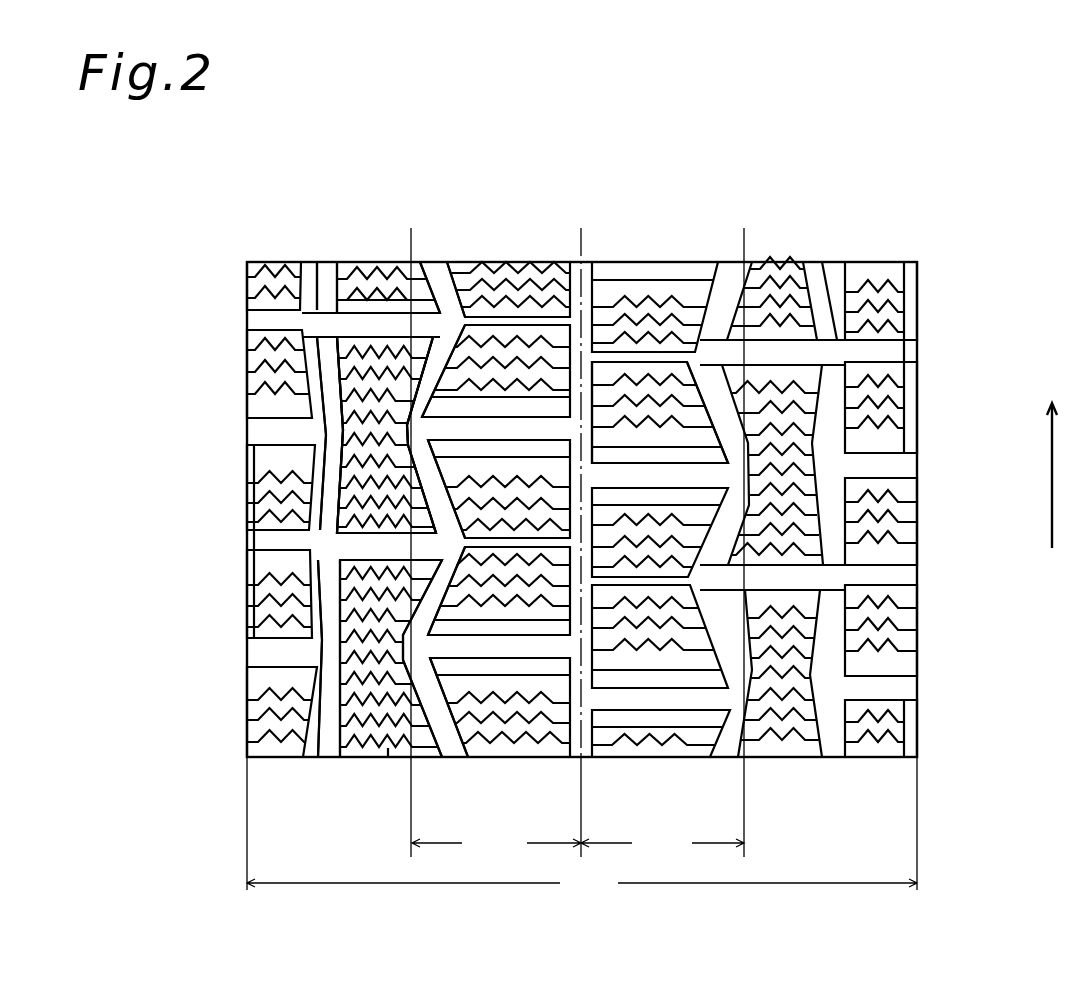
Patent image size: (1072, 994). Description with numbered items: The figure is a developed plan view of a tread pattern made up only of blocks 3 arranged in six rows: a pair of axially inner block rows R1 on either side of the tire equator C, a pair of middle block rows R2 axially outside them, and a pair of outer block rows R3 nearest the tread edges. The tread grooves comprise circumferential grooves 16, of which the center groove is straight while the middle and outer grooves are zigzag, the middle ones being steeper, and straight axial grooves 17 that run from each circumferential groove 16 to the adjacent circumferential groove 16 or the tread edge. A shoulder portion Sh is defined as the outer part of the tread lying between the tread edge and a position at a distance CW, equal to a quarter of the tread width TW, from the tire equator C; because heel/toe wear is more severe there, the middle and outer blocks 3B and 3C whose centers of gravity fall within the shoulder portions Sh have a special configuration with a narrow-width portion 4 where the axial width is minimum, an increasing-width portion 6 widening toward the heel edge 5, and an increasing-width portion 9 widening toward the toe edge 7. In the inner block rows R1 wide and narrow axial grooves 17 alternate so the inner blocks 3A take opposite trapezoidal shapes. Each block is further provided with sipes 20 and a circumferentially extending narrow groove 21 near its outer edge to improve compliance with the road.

The block 3 is at (328, 362).
The inner block 3A is at (540, 262).
The middle block 3B is at (388, 262).
The outer block 3C is at (263, 262).
The narrow-width portion 4 is at (310, 436).
The heel edge 5 is at (350, 262).
The increasing-width portion 6 is at (473, 262).
The toe edge 7 is at (360, 538).
The increasing-width portion 9 is at (320, 489).
The circumferential groove 16 is at (320, 267).
The axial groove 17 is at (668, 351).
The sipe 20 is at (265, 635).
The narrow groove 21 is at (252, 452).
The tire equator C is at (578, 262).
The distance of 25% of the tread width CW is at (577, 543).
The tread width TW is at (582, 830).
The inner block row R1 is at (478, 763).
The middle block row R2 is at (359, 765).
The outer block row R3 is at (279, 777).
The shoulder portion Sh is at (322, 791).